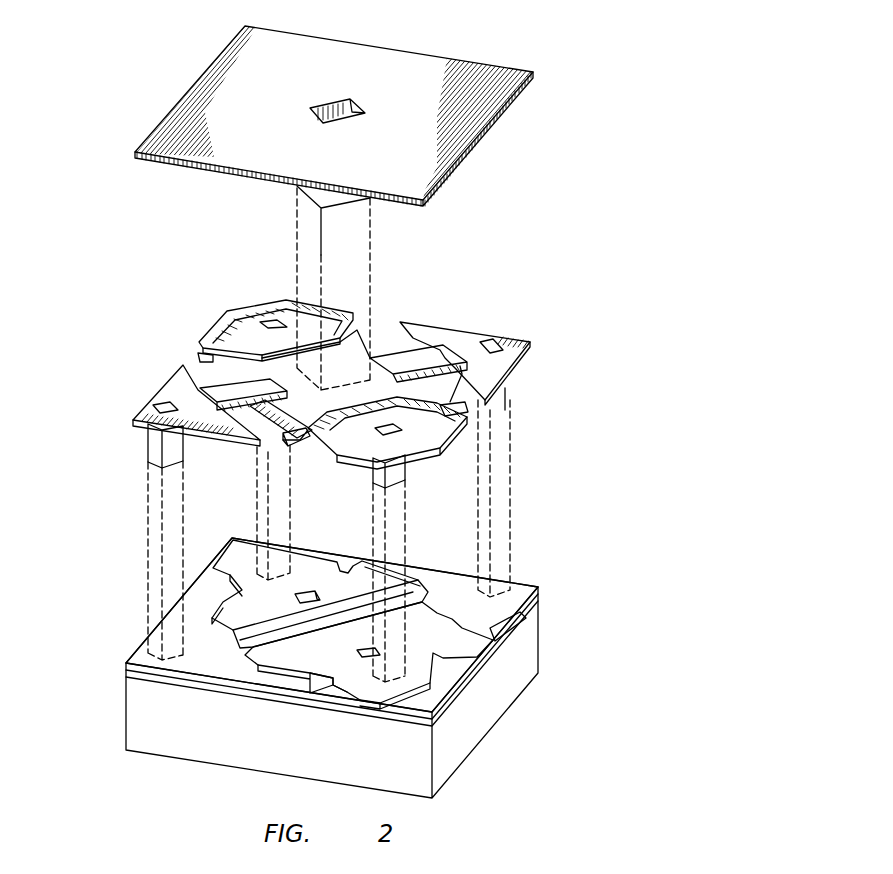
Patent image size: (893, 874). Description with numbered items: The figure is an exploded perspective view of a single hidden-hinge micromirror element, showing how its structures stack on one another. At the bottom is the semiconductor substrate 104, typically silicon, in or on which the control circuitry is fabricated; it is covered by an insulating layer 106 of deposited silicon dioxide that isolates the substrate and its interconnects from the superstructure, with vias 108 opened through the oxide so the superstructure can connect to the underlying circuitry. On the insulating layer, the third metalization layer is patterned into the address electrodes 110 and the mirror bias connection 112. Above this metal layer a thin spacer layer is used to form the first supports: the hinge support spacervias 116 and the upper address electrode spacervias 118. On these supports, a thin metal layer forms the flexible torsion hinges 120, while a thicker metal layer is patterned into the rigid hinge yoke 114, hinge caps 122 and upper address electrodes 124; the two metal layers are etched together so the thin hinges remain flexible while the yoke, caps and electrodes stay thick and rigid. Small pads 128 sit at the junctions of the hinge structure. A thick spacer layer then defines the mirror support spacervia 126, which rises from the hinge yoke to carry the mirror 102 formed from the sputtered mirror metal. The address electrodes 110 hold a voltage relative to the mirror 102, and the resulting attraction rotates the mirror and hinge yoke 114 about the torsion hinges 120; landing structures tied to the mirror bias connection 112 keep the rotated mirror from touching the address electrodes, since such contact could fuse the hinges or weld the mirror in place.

The mirror 102 is at (416, 71).
The substrate 104 is at (483, 712).
The insulating layer 106 is at (126, 682).
The via / contact opening 108 is at (294, 590).
The address electrodes 110 is at (240, 580).
The mirror bias connection 112 is at (142, 653).
The hinge yoke 114 is at (386, 327).
The hinge support spacervias 116 is at (152, 443).
The upper address electrode spacervias 118 is at (400, 468).
The torsion hinges 120 is at (235, 397).
The hinge cap 122 is at (173, 388).
The upper address electrodes 124 is at (270, 313).
The mirror support spacervia 126 is at (343, 196).
The connector block 128 is at (303, 448).